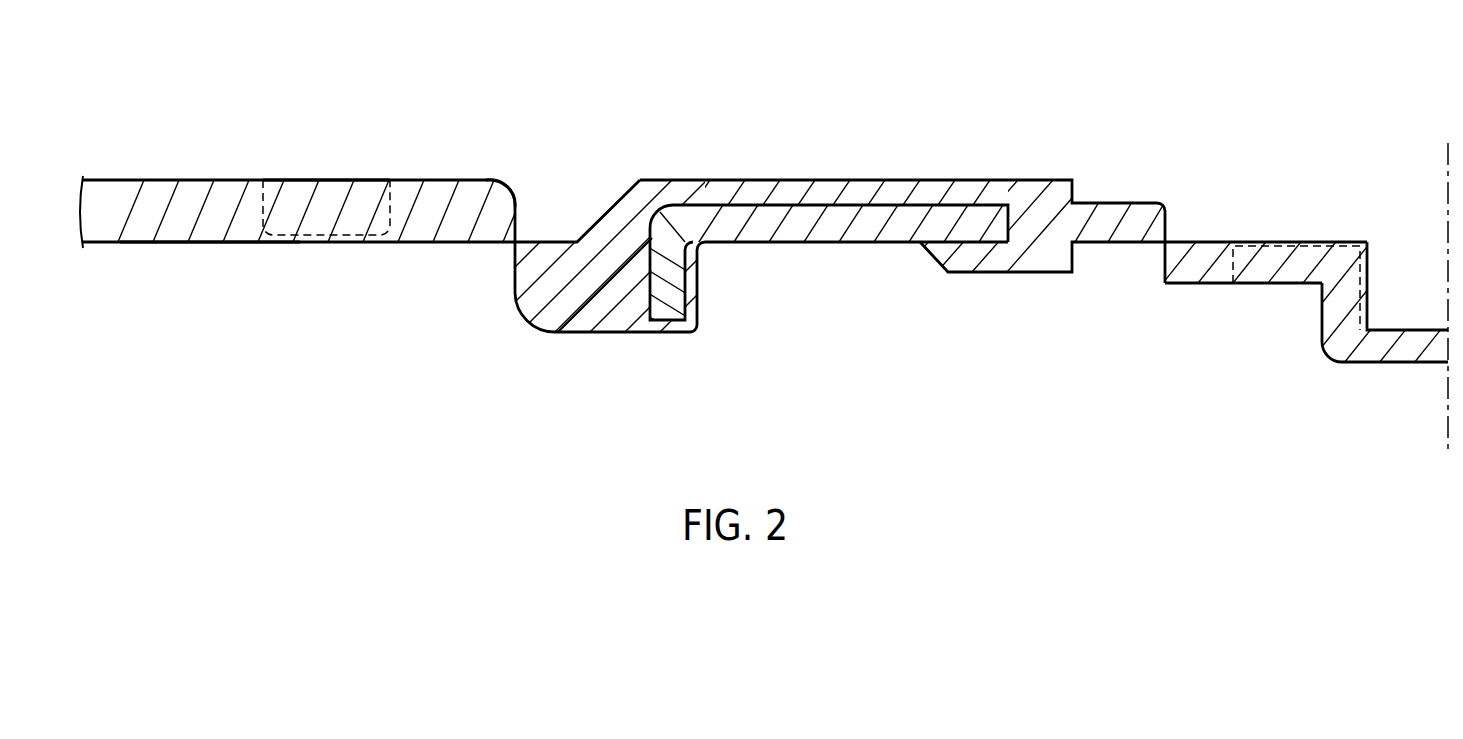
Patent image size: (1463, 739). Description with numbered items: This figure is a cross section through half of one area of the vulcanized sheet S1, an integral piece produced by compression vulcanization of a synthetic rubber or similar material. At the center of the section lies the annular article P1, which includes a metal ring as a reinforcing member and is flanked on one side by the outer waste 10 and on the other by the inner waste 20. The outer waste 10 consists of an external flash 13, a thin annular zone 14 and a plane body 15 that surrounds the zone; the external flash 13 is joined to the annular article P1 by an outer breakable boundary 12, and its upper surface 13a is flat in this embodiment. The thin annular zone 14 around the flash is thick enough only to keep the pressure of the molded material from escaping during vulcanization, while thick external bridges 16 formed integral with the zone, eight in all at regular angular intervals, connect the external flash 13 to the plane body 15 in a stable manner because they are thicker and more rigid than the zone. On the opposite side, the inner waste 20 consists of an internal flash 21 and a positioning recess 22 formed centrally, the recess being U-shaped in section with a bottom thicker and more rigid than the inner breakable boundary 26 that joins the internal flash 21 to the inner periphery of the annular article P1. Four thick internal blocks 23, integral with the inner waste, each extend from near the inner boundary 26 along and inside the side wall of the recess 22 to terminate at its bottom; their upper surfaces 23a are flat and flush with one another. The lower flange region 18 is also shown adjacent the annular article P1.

The vulcanized sheet S1 is at (617, 128).
The outer waste 10 is at (222, 307).
The outer breakable boundary 12 is at (507, 247).
The external flash 13 is at (402, 226).
The upper surface of the external flash 13a is at (455, 182).
The thin annular zone 14 is at (312, 243).
The plane body 15 is at (227, 243).
The external bridge 16 is at (335, 184).
The annular article P1 is at (818, 188).
The insert plate 18 is at (800, 228).
The inner breakable boundary 26 is at (1163, 243).
The inner waste 20 is at (1173, 385).
The internal flash 21 is at (1212, 267).
The positioning recess 22 is at (1332, 322).
The internal block 23 is at (1307, 263).
The upper surface of the internal block 23a is at (1270, 240).